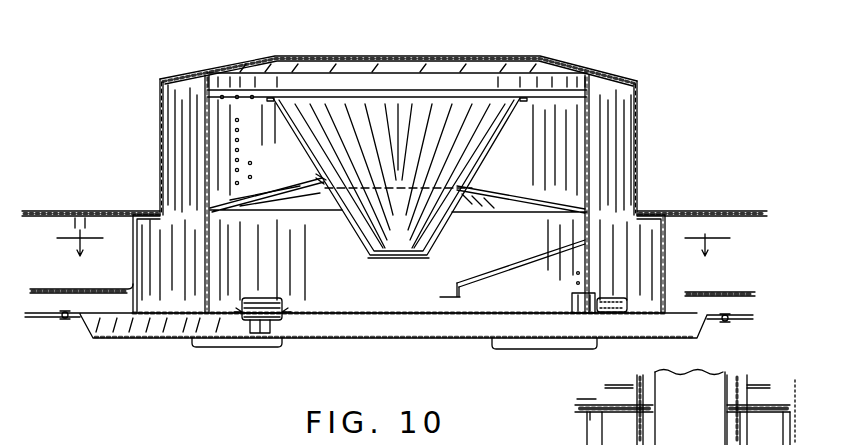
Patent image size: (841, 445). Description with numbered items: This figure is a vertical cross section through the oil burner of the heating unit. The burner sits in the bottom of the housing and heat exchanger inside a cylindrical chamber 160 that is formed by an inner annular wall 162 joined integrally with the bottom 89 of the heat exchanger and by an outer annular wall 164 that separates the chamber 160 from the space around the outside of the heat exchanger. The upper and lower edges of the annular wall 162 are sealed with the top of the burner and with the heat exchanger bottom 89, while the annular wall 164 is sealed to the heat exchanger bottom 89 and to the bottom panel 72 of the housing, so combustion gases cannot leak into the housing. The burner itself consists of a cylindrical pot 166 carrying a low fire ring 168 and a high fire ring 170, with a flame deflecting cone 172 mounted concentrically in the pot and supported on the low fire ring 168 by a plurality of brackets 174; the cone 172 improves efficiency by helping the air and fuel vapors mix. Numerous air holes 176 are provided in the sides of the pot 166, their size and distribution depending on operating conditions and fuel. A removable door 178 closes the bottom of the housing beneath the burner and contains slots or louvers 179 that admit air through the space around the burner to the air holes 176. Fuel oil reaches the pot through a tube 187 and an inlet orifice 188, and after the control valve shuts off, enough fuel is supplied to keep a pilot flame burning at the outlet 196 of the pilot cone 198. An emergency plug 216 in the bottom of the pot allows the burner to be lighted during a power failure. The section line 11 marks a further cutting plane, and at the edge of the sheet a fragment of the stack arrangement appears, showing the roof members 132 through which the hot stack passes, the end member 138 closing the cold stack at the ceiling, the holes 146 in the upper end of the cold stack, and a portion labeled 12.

The high fire ring 170 is at (263, 57).
The annular wall 162 is at (158, 126).
The cylindrical chamber 160 is at (175, 163).
The air holes 176 is at (257, 100).
The brackets 174 is at (320, 177).
The flame deflecting cone 172 is at (482, 148).
The low fire ring 168 is at (273, 208).
The cylindrical pot 166 is at (587, 155).
The bottom of heat exchanger 89 is at (730, 212).
The section line 11 is at (393, 237).
The annular wall 164 is at (665, 272).
The pilot cone 198 is at (520, 263).
The outlet 196 is at (450, 298).
The inlet orifice 188 is at (571, 304).
The tube 187 is at (627, 306).
The removable door 178 is at (153, 340).
The slots or louvers 179 is at (240, 343).
The emergency plug 216 is at (283, 320).
The bottom panel 72 is at (753, 318).
The roof members 132 is at (632, 382).
The end member 138 is at (590, 399).
The housing 12 is at (673, 409).
The holes 146 is at (685, 408).